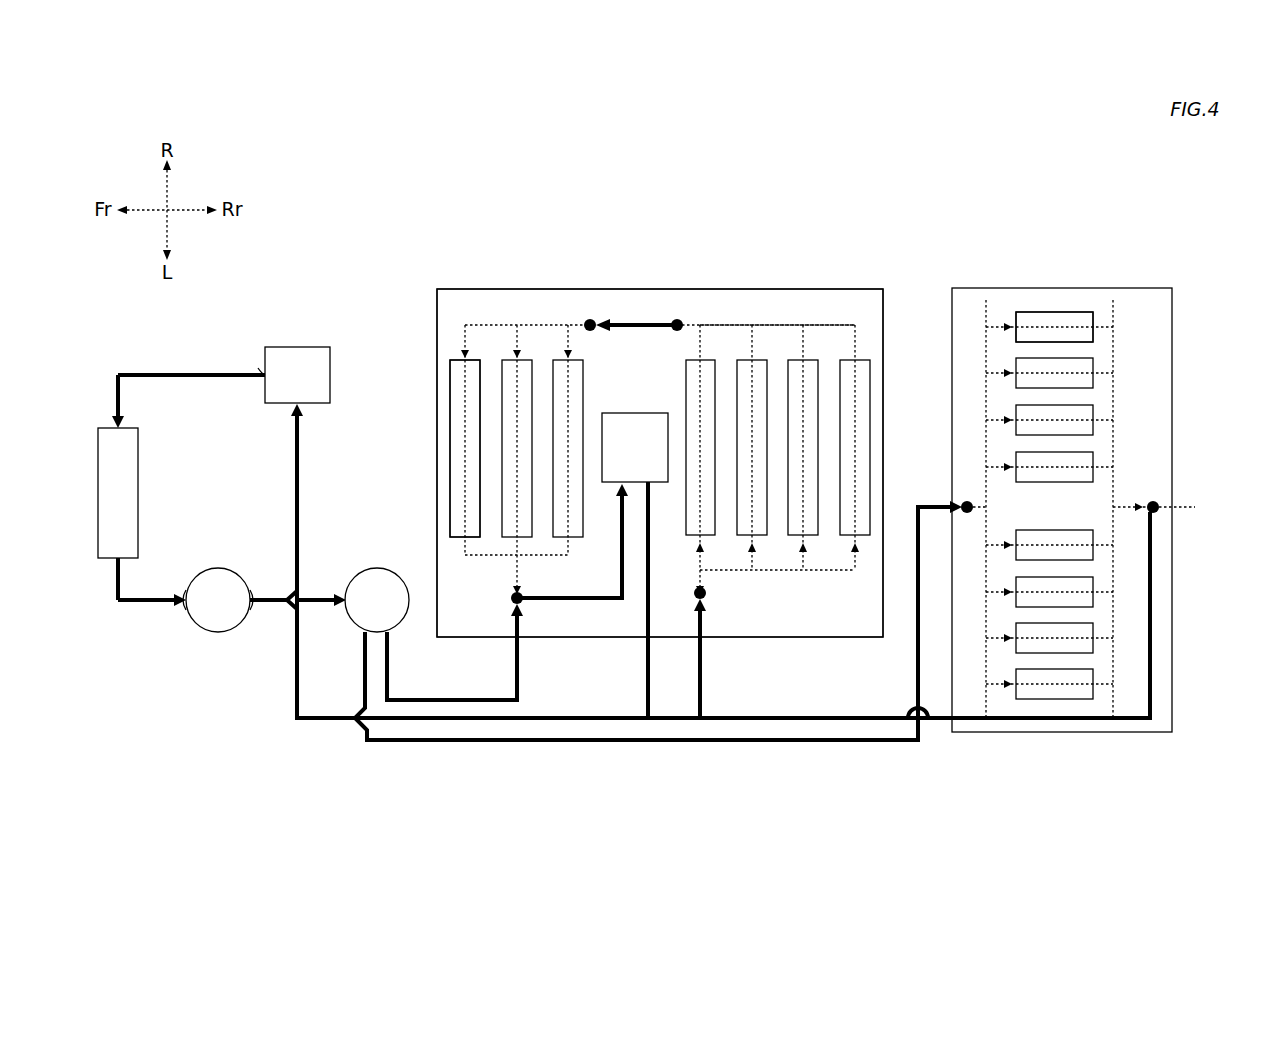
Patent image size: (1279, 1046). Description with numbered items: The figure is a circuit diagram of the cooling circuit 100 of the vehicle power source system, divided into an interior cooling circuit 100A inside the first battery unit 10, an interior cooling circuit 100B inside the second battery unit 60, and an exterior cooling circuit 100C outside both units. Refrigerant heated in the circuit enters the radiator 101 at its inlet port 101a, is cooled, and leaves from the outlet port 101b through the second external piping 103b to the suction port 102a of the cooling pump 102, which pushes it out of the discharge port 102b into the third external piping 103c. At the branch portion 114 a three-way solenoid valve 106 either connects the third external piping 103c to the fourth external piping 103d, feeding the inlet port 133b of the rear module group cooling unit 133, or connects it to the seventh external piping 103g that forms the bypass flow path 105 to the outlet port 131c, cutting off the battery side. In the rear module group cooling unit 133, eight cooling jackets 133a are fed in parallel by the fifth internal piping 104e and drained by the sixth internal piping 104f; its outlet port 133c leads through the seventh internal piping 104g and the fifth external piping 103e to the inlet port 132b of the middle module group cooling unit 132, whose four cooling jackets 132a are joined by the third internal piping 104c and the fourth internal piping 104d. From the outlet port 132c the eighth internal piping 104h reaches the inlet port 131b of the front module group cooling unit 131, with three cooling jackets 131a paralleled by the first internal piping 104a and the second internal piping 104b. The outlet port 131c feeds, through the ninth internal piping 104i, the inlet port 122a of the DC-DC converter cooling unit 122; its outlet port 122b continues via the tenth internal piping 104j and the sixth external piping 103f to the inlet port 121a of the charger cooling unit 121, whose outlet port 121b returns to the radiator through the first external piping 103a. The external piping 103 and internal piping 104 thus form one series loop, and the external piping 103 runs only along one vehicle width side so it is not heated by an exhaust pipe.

The first battery unit 10 is at (734, 288).
The second battery unit 60 is at (1172, 298).
The cooling circuit 100 is at (867, 231).
The interior cooling circuit 100A is at (500, 310).
The interior cooling circuit 100B is at (1147, 357).
The exterior cooling circuit 100C is at (803, 772).
The radiator 101 is at (136, 491).
The inlet port 101a is at (128, 421).
The outlet port 101b is at (114, 566).
The cooling pump 102 is at (218, 568).
The suction port 102a is at (188, 614).
The discharge port 102b is at (250, 606).
The external piping 103 is at (862, 741).
The first external piping 103a is at (162, 375).
The second external piping 103b is at (148, 604).
The third external piping 103c is at (273, 598).
The fourth external piping 103d is at (565, 740).
The fifth external piping 103e is at (740, 719).
The sixth external piping 103f is at (330, 718).
The seventh external piping 103g is at (470, 700).
The internal piping 104 is at (836, 323).
The first internal piping 104a is at (568, 338).
The second internal piping 104b is at (566, 544).
The third internal piping 104c is at (855, 560).
The fourth internal piping 104d is at (855, 340).
The fifth internal piping 104e is at (987, 467).
The sixth internal piping 104f is at (1116, 472).
The seventh internal piping 104g is at (1153, 600).
The eighth internal piping 104h is at (632, 324).
The ninth internal piping 104i is at (592, 598).
The tenth internal piping 104j is at (642, 606).
The bypass flow path 105 is at (455, 708).
The three-way solenoid valve 106 is at (364, 570).
The branch portion 114 is at (364, 569).
The charger cooling unit 121 is at (300, 345).
The inlet port 121a is at (290, 408).
The outlet port 121b is at (264, 370).
The DC-DC converter cooling unit 122 is at (650, 413).
The inlet port 122a is at (628, 475).
The outlet port 122b is at (649, 552).
The front module group cooling unit 131 is at (450, 382).
The cooling jacket 131a is at (568, 400).
The inlet port 131b is at (592, 321).
The outlet port 131c is at (511, 599).
The middle module group cooling unit 132 is at (895, 353).
The cooling jacket 132a is at (869, 406).
The inlet port 132b is at (694, 593).
The outlet port 132c is at (680, 321).
The rear module group cooling unit 133 is at (1034, 304).
The cooling jacket 133a is at (1093, 466).
The inlet port 133b is at (960, 504).
The outlet port 133c is at (1178, 507).